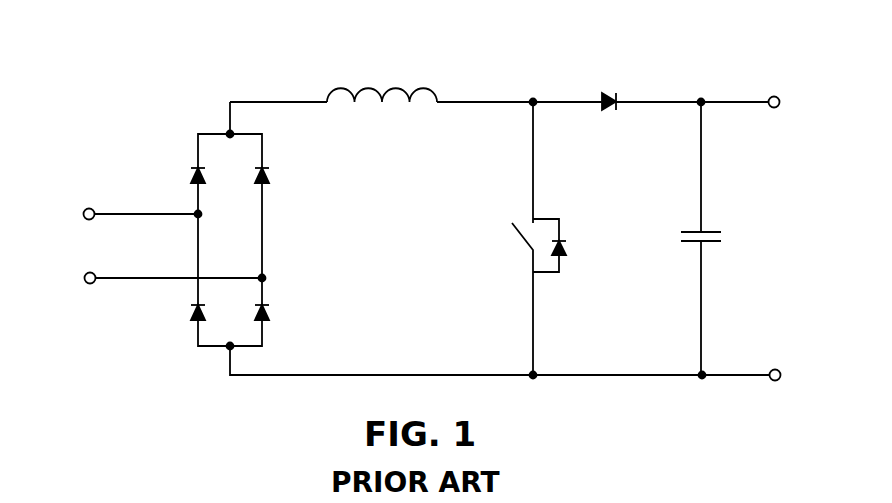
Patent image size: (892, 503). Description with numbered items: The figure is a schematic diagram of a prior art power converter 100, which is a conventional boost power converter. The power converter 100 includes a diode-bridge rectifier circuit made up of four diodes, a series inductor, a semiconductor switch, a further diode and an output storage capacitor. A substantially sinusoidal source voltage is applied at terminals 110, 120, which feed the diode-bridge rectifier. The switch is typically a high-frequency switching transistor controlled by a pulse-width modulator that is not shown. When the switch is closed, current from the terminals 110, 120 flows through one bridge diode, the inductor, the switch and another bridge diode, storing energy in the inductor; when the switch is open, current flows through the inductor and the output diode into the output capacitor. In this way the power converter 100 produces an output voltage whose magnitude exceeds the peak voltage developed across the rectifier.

The power converter 100 is at (416, 195).
The terminal 110 is at (90, 208).
The terminal 120 is at (90, 284).